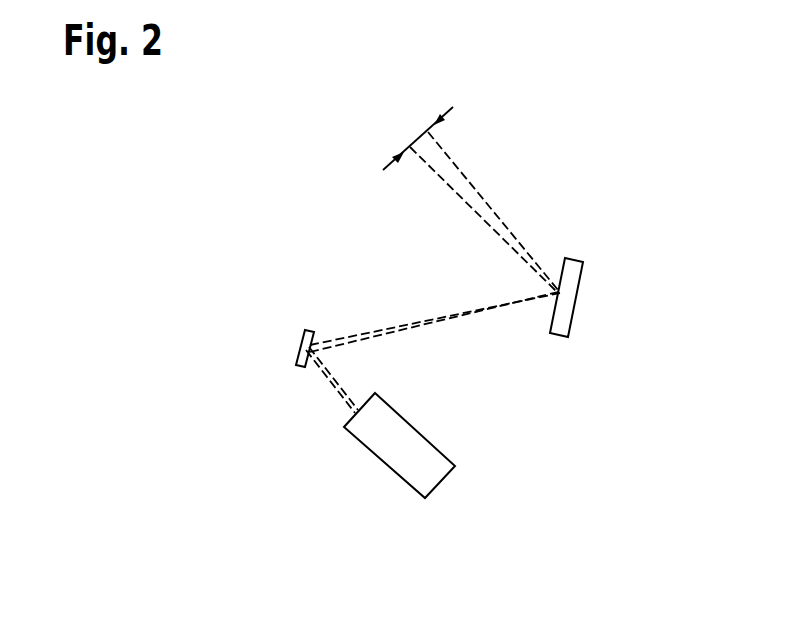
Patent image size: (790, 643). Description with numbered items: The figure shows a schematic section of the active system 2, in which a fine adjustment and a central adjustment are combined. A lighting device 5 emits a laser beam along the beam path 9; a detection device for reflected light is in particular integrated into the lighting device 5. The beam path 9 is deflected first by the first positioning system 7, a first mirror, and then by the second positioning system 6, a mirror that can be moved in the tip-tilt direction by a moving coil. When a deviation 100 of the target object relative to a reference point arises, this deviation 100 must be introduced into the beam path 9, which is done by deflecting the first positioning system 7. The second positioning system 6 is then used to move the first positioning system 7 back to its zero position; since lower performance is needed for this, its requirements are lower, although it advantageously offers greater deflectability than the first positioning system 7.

The LIDAR sensor arrangement 2 is at (249, 202).
The lighting device 5 is at (428, 473).
The second positioning system 6 is at (563, 312).
The first positioning system 7 is at (305, 350).
The beam path 9 is at (458, 165).
The deviation 100 is at (421, 134).